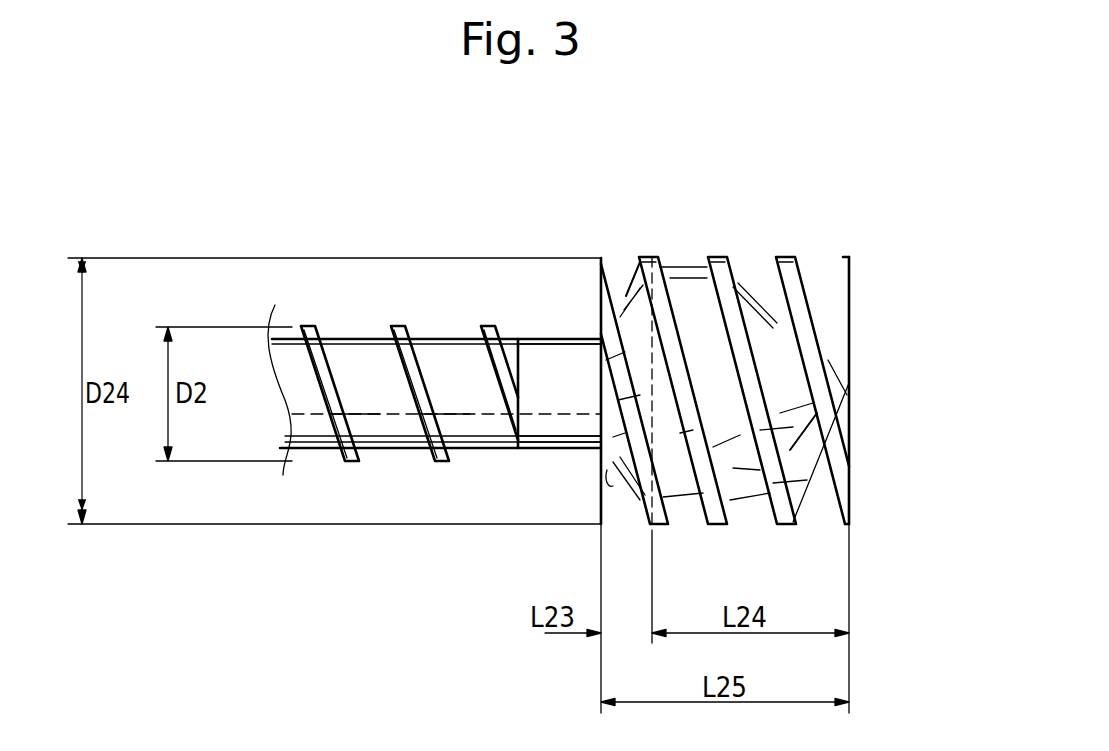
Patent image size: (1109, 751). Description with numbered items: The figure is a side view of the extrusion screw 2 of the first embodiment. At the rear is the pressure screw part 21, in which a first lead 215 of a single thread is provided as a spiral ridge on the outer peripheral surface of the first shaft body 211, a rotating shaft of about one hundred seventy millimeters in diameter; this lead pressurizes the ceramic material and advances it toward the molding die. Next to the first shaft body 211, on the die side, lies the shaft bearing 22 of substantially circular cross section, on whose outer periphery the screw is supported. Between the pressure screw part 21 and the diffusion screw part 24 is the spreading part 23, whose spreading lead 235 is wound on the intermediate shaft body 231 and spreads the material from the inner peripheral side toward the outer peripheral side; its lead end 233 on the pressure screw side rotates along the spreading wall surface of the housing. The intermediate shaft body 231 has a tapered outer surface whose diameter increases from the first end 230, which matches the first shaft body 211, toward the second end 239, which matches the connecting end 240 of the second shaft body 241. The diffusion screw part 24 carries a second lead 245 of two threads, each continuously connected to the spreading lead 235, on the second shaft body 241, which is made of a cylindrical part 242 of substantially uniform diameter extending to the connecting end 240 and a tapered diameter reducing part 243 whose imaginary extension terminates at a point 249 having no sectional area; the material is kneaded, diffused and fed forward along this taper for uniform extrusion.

The extrusion screw 2 is at (793, 236).
The pressure screw part 21 is at (349, 337).
The first shaft body 211 is at (466, 406).
The first lead 215 is at (427, 435).
The shaft bearing 22 is at (538, 449).
The spreading part 23 is at (625, 298).
The first end 230 is at (615, 360).
The intermediate shaft body 231 is at (610, 472).
The lead end 233 is at (602, 293).
The spreading lead 235 is at (622, 398).
The second end 239 is at (665, 392).
The connecting end 240 is at (665, 398).
The diffusion screw part 24 is at (738, 290).
The second shaft body 241 is at (753, 522).
The cylindrical part 242 is at (693, 527).
The diameter reducing part 243 is at (778, 310).
The second lead 245 is at (800, 478).
The point 249 is at (849, 382).